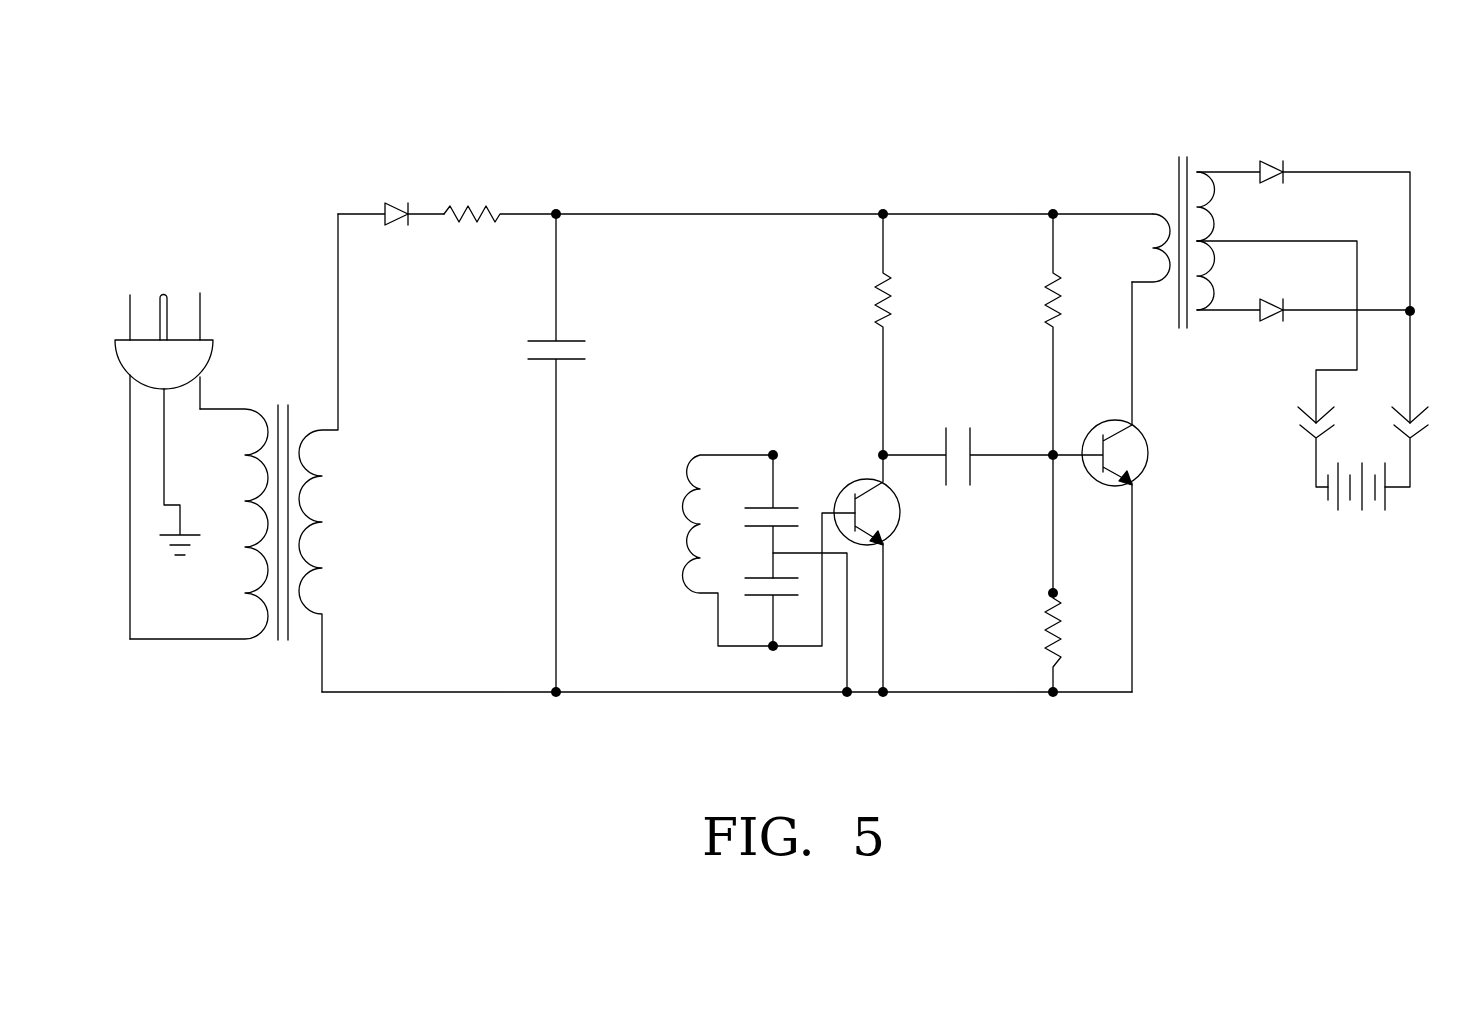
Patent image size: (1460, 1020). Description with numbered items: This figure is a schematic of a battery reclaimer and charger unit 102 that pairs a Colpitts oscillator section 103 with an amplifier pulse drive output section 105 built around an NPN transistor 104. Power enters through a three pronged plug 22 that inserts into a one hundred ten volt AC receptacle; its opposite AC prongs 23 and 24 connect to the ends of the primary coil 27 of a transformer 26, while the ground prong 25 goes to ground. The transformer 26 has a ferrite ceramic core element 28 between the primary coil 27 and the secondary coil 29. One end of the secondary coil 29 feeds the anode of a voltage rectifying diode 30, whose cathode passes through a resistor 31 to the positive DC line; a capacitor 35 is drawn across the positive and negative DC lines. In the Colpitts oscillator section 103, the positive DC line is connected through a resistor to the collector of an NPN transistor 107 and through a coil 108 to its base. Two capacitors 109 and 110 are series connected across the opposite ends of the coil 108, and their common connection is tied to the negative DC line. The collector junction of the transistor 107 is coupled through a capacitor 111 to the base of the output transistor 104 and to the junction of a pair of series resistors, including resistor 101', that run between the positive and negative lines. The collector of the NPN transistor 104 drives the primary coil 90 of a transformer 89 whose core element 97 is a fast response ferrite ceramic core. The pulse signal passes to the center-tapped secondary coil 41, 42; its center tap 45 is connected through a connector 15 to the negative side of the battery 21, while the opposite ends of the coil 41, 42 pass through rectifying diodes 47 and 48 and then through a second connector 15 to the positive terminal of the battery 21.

The connector 15 is at (1306, 432).
The battery 21 is at (1343, 505).
The three pronged plug 22 is at (198, 357).
The AC prong 23 is at (130, 294).
The AC prong 24 is at (200, 302).
The ground prong 25 is at (164, 293).
The transformer 26 is at (267, 480).
The primary coil 27 is at (247, 548).
The ferrite ceramic core element 28 is at (288, 410).
The secondary coil 29 is at (322, 521).
The voltage rectifying diode 30 is at (389, 202).
The resistor 31 is at (461, 219).
The capacitor 35 is at (541, 361).
The secondary coil 41 is at (1218, 170).
The secondary coil 42 is at (1215, 318).
The center tap 45 is at (1225, 240).
The rectifying diode 47 is at (1268, 160).
The rectifying diode 48 is at (1268, 320).
The transformer 89 is at (1224, 252).
The primary coil 90 is at (1158, 248).
The core element 97 is at (1178, 168).
The resistor 101' is at (1082, 573).
The battery reclaimer and charger unit 102 is at (861, 560).
The Colpitts oscillator section 103 is at (818, 202).
The NPN transistor 104 is at (1143, 464).
The amplifier pulse drive output section 105 is at (1320, 531).
The NPN transistor 107 is at (891, 529).
The coil 108 is at (686, 507).
The capacitor 109 is at (787, 508).
The capacitor 110 is at (760, 598).
The capacitor 111 is at (949, 478).